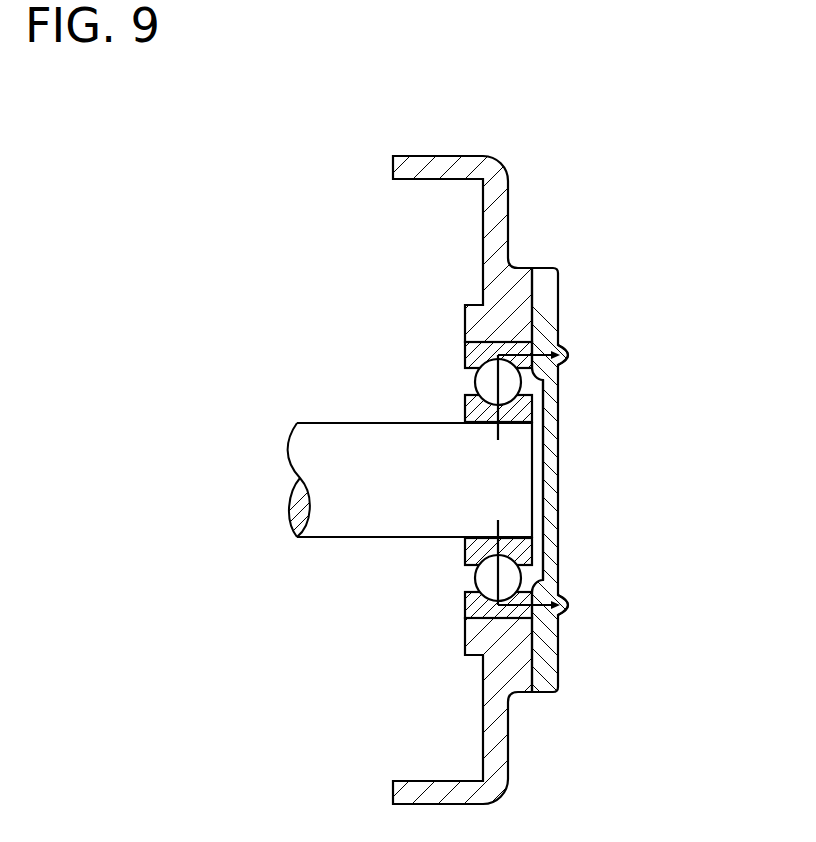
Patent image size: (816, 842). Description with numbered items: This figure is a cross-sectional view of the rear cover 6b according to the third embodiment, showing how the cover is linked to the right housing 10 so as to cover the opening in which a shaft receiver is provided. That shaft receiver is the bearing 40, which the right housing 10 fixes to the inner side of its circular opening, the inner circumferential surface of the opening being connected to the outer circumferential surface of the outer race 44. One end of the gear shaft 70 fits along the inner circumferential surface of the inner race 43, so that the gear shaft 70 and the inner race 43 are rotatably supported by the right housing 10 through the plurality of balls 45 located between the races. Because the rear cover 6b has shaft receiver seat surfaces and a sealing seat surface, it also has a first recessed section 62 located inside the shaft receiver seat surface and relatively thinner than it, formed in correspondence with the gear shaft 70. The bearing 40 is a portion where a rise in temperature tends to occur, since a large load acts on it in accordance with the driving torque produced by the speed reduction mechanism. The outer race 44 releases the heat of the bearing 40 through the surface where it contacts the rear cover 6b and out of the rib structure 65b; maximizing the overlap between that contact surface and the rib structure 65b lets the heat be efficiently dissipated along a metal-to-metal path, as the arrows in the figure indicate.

The right housing 10 is at (402, 168).
The rear cover 6b is at (548, 293).
The first recessed section 62 is at (536, 505).
The rib structure 65b is at (570, 355).
The gear shaft 70 is at (312, 455).
The bearing 40 is at (408, 421).
The outer race 44 is at (467, 352).
The ball 45 is at (480, 381).
The inner race 43 is at (467, 410).